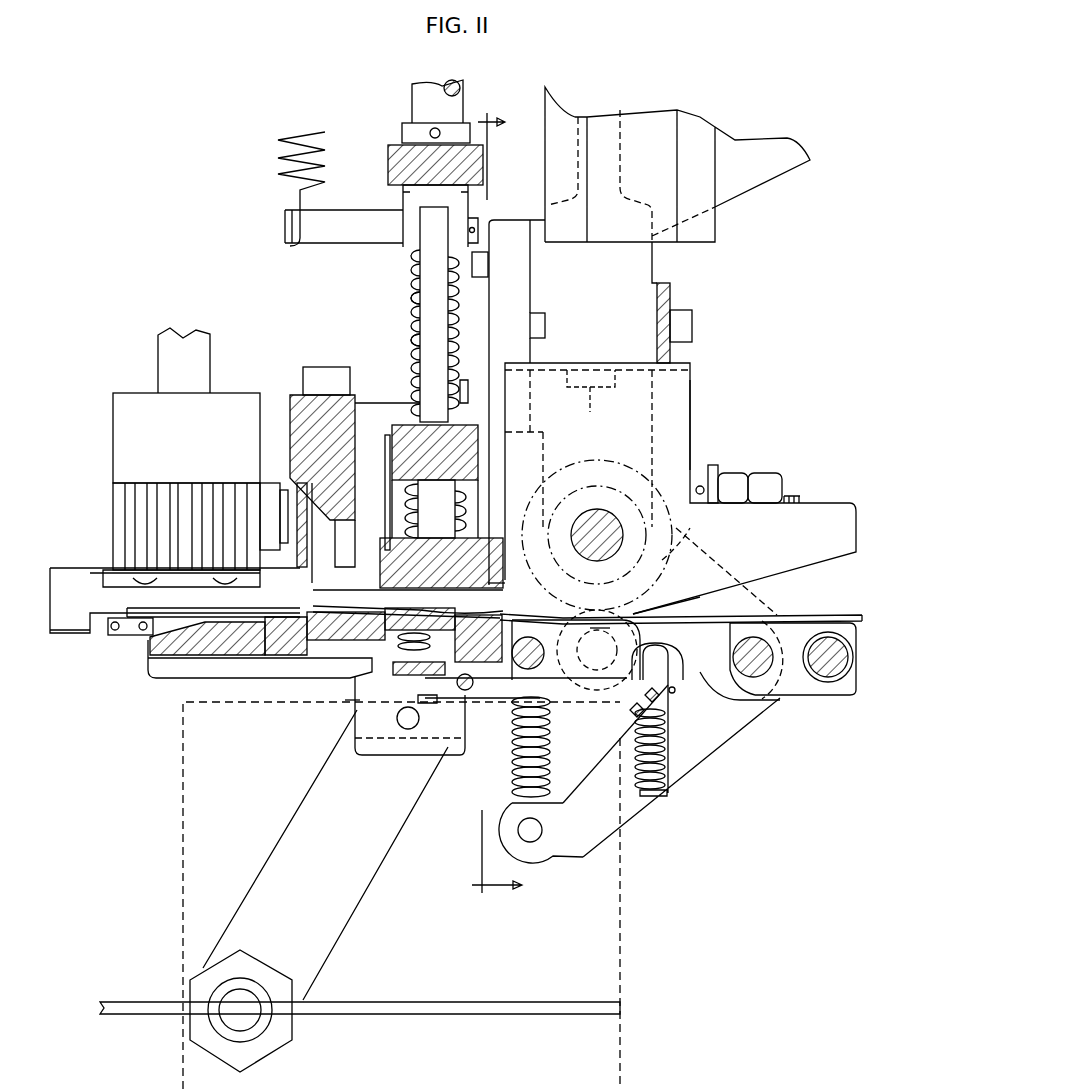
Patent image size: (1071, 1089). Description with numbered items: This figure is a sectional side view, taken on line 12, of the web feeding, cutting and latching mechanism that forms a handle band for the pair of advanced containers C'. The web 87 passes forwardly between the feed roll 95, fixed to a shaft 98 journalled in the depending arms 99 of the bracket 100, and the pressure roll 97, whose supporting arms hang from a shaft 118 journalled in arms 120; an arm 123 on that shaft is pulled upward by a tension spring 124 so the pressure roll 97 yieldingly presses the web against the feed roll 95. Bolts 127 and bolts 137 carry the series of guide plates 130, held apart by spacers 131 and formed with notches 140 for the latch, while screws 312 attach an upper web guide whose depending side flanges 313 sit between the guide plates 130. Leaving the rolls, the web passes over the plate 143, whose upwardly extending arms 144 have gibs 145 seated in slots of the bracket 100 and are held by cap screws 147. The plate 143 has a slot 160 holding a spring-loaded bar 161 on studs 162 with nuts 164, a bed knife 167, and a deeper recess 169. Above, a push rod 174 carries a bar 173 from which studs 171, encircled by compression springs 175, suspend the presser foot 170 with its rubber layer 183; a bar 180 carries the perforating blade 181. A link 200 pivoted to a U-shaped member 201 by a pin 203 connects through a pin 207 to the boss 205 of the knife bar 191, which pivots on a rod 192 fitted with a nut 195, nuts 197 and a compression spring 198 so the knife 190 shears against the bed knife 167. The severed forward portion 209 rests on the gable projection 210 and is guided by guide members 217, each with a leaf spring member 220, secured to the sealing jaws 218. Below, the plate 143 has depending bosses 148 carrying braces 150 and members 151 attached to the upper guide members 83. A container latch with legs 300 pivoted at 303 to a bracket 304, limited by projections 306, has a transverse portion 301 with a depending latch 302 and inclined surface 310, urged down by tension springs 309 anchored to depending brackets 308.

The section line 12- 12 is at (518, 504).
The push rod 174 is at (445, 118).
The bar 173 is at (468, 176).
The U-shaped member 201 is at (468, 210).
The elongated pin 203 is at (380, 237).
The link 200 is at (430, 262).
The studs 171 is at (410, 294).
The compression springs 175 is at (412, 334).
The elongated pin 207 is at (386, 395).
The cap screws 147 is at (488, 265).
The arms 144 is at (490, 356).
The gibs 145 is at (546, 324).
The bracket 100 is at (582, 278).
The depending side flanges 313 is at (697, 537).
The depending arms 99 is at (652, 412).
The screws 312 is at (591, 404).
The shaft 98 is at (600, 522).
The feed roll 95 is at (672, 576).
The compression spring 198 is at (704, 472).
The nuts 197 is at (742, 480).
The rod 192 is at (791, 495).
The web 87 is at (822, 616).
The slot 160 is at (450, 614).
The layer of rubber 183 is at (512, 586).
The shaft 118 is at (760, 645).
The pressure roll 97 is at (640, 630).
The guide plates 130 is at (697, 664).
The arms 120 is at (729, 694).
The notches 140 is at (680, 665).
The bolts 137 is at (840, 680).
The spacers 131 is at (817, 682).
The legs 300 is at (532, 654).
The transversely extending portion 301 is at (657, 661).
The inclined surface 310 is at (674, 692).
The bolts 127 is at (527, 645).
The pivots 303 is at (468, 690).
The plate 143 is at (348, 655).
The nuts 164 is at (393, 688).
The stud 162 is at (425, 720).
The projections 306 is at (440, 690).
The bracket 304 is at (357, 702).
The depending bosses 148 is at (397, 750).
The recess 169 is at (262, 650).
The bed knife 167 is at (292, 650).
The gable roof projecting portion 210 is at (160, 665).
The guide members 217 is at (90, 597).
The leaf spring member 220 is at (140, 638).
The forward extending portion of the web 209 is at (208, 611).
The knife 190 is at (302, 575).
The nut 195 is at (272, 495).
The sealing jaws 218 is at (171, 449).
The knife bar 191 is at (297, 415).
The boss 205 is at (311, 391).
The perforating blade 181 is at (384, 458).
The bar 180 is at (468, 474).
The bar 161 is at (419, 506).
The presser foot 170 is at (466, 527).
The tension spring 124 is at (548, 768).
The arm 123 is at (645, 806).
The depending latch 302 is at (627, 715).
The depending brackets 308 is at (662, 766).
The tension spring 309 is at (657, 757).
The braces 150 is at (304, 896).
The members 151 is at (272, 1052).
The upper guide members 83 is at (400, 1005).
The pair of advanced containers C' is at (641, 891).